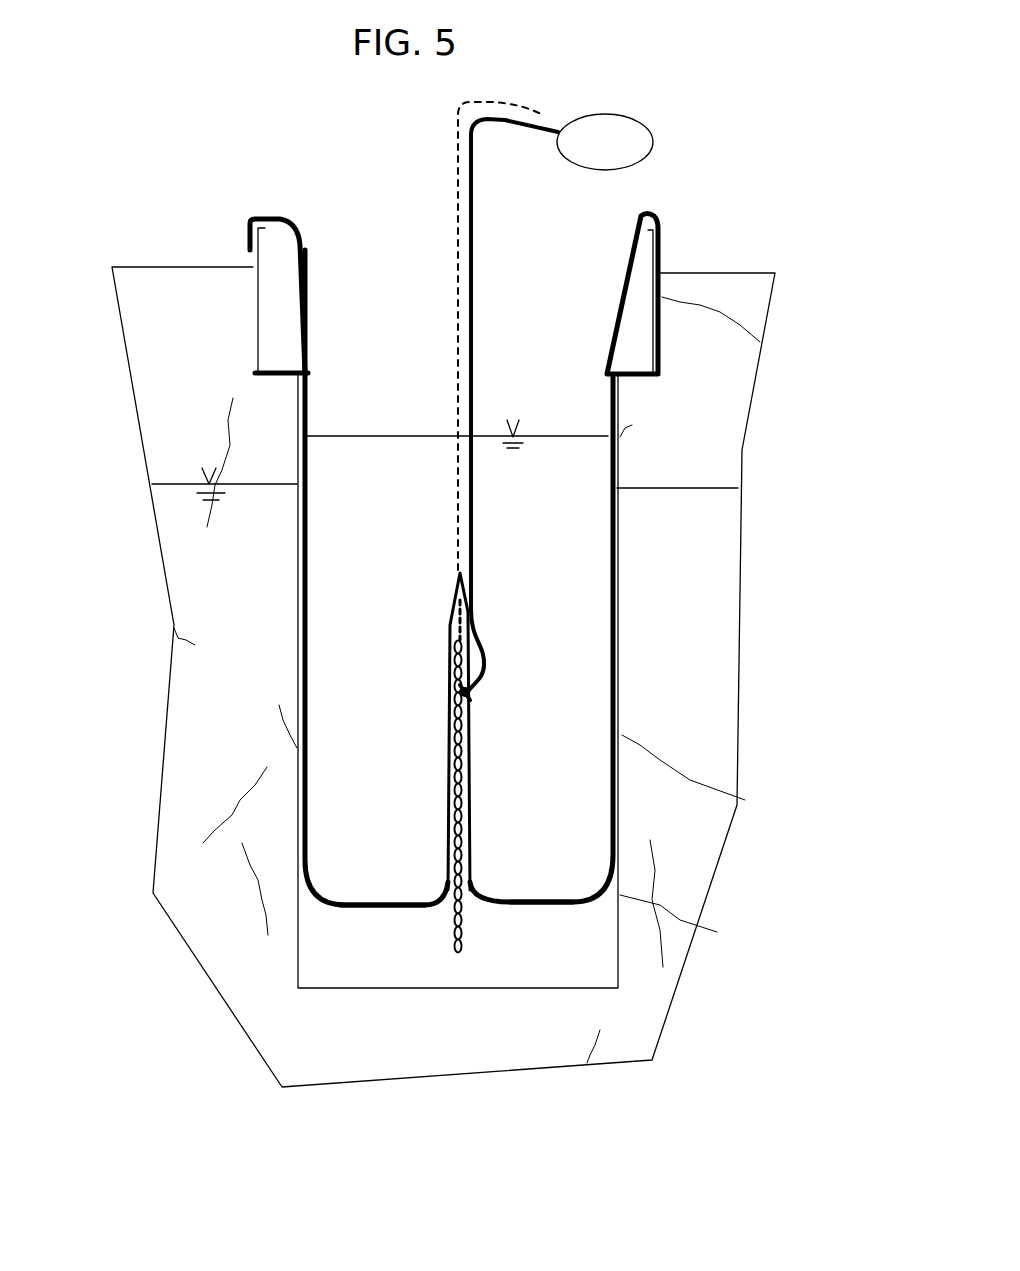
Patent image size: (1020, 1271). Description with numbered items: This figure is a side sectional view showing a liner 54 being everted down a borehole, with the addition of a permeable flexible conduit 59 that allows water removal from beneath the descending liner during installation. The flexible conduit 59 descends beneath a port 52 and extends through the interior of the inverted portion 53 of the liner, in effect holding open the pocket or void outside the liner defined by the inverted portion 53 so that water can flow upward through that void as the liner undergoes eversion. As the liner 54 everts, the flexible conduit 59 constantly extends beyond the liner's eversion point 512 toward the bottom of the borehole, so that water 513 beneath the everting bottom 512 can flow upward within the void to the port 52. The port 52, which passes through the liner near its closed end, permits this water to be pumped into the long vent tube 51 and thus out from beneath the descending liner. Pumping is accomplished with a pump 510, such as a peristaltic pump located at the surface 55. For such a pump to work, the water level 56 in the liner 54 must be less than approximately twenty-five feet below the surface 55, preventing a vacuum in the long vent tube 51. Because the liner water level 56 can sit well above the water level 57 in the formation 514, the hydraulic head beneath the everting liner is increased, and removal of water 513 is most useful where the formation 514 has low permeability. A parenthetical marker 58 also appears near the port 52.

The long vent tube 51 is at (472, 200).
The port 52 is at (473, 698).
The inverted portion of the liner 53 is at (447, 797).
The liner 54 is at (273, 217).
The surface 55 is at (188, 265).
The water level in the liner 56 is at (418, 433).
The water level in the formation 57 is at (641, 487).
The connection point 58 is at (526, 676).
The flexible conduit 59 is at (458, 953).
The pump 510 is at (605, 142).
The eversion point 512 is at (413, 910).
The water 513 is at (544, 926).
The formation 514 is at (668, 903).